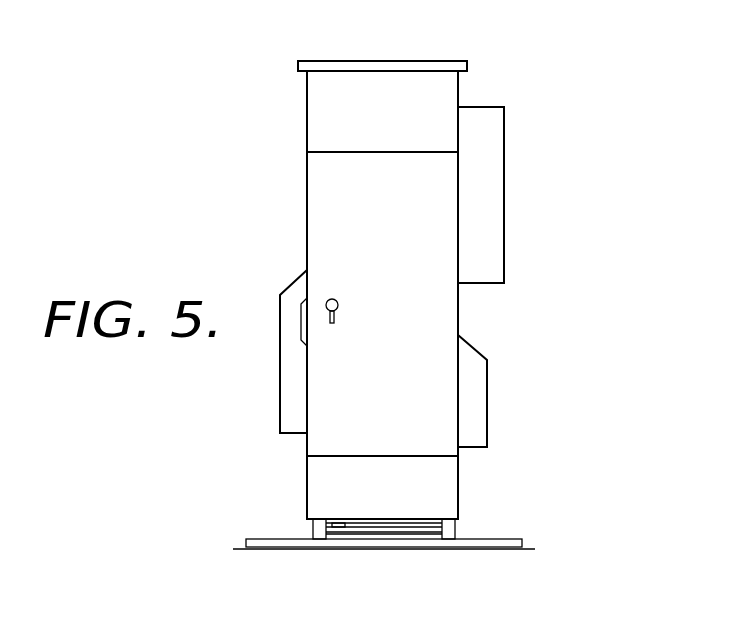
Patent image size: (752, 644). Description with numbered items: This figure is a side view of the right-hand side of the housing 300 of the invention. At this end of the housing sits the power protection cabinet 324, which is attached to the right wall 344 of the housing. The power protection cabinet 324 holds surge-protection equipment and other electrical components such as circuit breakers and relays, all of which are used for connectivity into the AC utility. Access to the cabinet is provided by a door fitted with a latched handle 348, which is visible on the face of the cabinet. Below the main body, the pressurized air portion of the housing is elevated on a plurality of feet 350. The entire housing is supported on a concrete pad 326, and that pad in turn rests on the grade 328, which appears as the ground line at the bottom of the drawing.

The sheet processing apparatus 300 is at (603, 240).
The right wall 344 is at (431, 78).
The power protection cabinet 324 is at (305, 229).
The latched handle 348 is at (330, 298).
The feet 350 is at (320, 528).
The concrete pad 326 is at (523, 545).
The grade 328 is at (513, 583).